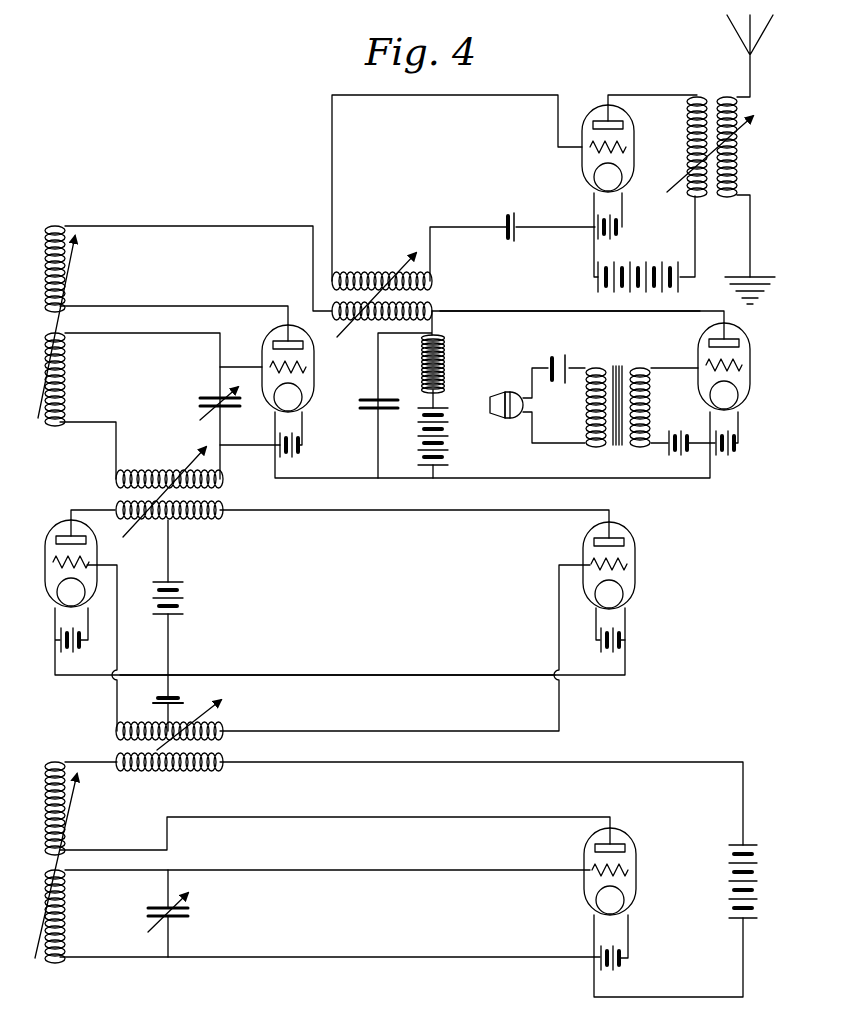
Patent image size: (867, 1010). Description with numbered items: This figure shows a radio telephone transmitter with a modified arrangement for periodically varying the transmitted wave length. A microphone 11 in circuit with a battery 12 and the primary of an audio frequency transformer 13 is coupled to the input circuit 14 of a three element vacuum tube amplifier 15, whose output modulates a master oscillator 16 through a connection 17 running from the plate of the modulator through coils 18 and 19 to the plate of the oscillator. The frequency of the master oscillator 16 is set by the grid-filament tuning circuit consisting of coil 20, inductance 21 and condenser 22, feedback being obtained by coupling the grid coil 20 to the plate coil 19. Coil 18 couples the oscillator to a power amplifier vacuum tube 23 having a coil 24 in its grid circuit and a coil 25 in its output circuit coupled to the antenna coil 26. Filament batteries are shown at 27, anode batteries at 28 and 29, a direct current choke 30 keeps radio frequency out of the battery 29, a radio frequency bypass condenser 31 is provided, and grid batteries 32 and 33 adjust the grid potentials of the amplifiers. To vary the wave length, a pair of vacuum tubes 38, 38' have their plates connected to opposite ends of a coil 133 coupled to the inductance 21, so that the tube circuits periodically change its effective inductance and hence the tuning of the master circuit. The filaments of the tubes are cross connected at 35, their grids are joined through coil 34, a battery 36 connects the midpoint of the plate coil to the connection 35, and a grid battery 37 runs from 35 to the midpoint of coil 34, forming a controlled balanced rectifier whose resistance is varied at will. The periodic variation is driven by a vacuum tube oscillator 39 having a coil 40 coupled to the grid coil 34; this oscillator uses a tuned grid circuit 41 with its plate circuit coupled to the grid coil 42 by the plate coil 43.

The microphone 11 is at (506, 394).
The battery 12 is at (563, 356).
The audio frequency transformer 13 is at (607, 416).
The input circuit 14 is at (652, 407).
The three element vacuum tube amplifier 15 is at (745, 377).
The master oscillator 16 is at (303, 375).
The connection 17 is at (503, 312).
The coil 18 is at (376, 324).
The plate coil 19 is at (52, 228).
The grid coil 20 is at (60, 426).
The inductance 21 is at (137, 476).
The condenser 22 is at (224, 408).
The vacuum tube 23 is at (591, 115).
The coil 24 is at (350, 280).
The coil 25 is at (688, 148).
The antenna coil 26 is at (740, 165).
The filament battery 27 is at (630, 237).
The anode battery 28 is at (655, 264).
The anode battery 29 is at (446, 436).
The direct current choke 30 is at (424, 364).
The radio frequency bypass condenser 31 is at (377, 417).
The grid battery 32 is at (514, 216).
The grid battery 33 is at (681, 454).
The coil 34 is at (145, 728).
The connection 35 is at (289, 676).
The battery 36 is at (180, 598).
The grid battery 37 is at (173, 701).
The vacuum tube 38 is at (55, 586).
The vacuum tube 38' is at (624, 587).
The vacuum tube oscillator 39 is at (630, 888).
The coil 40 is at (184, 772).
The tuned grid circuit 41 is at (172, 916).
The grid coil 42 is at (46, 879).
The plate coil 43 is at (47, 802).
The coil 133 is at (184, 520).